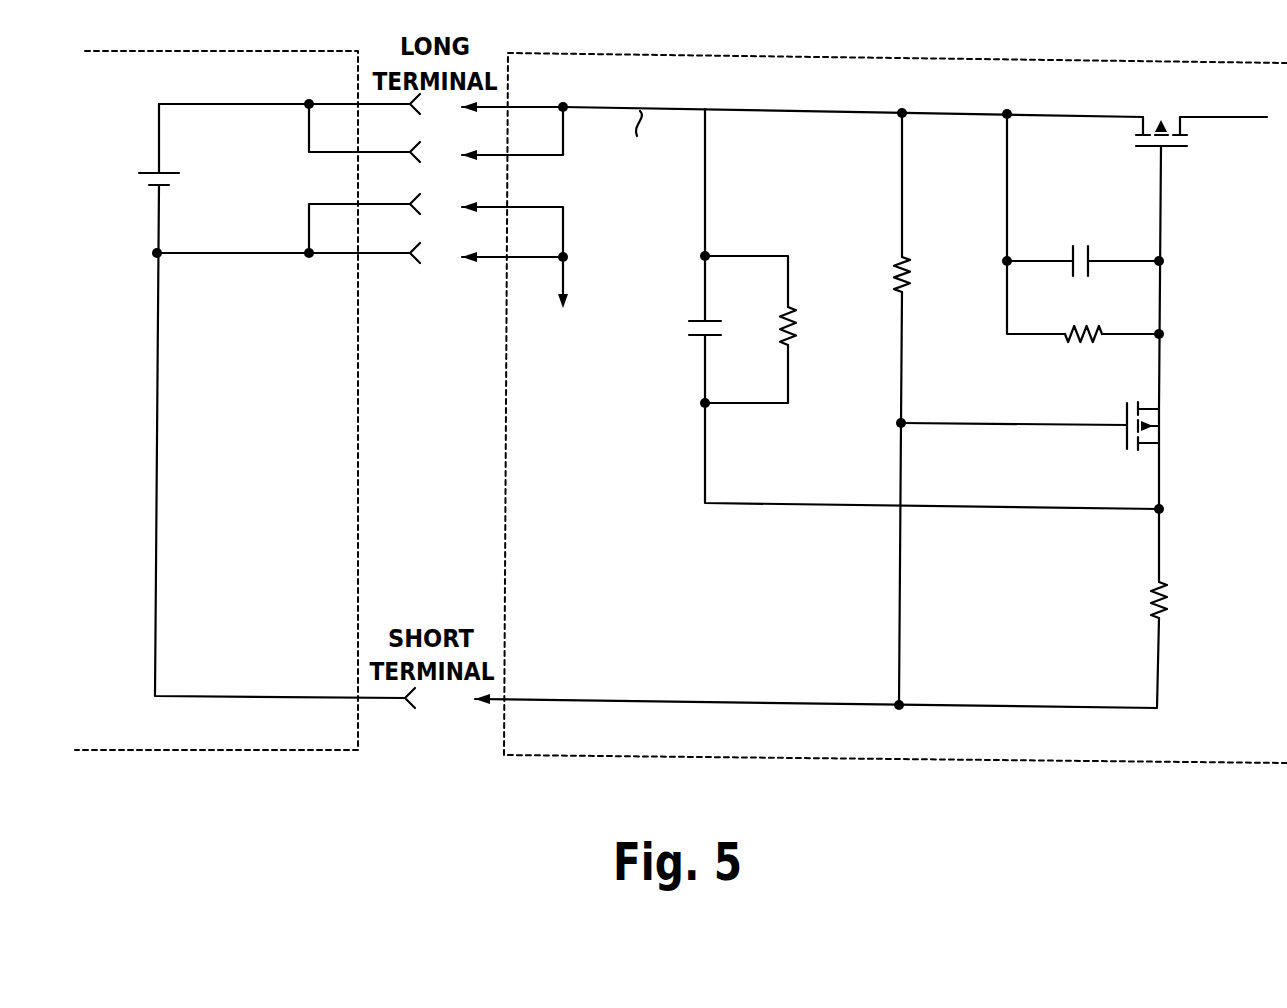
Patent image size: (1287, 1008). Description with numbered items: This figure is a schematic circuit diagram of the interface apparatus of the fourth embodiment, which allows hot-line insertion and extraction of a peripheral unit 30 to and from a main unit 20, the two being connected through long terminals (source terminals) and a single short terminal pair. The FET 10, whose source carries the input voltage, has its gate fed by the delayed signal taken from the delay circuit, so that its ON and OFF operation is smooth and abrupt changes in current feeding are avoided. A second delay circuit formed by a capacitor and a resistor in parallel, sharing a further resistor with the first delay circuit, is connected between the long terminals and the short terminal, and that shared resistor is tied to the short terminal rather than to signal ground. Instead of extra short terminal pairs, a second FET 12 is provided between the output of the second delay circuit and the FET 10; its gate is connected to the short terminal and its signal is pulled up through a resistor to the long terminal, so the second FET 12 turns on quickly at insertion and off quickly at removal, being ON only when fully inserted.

The FET 10 is at (1188, 153).
The second FET 12 is at (1177, 425).
The main unit 20 is at (212, 750).
The peripheral unit 30 is at (822, 757).